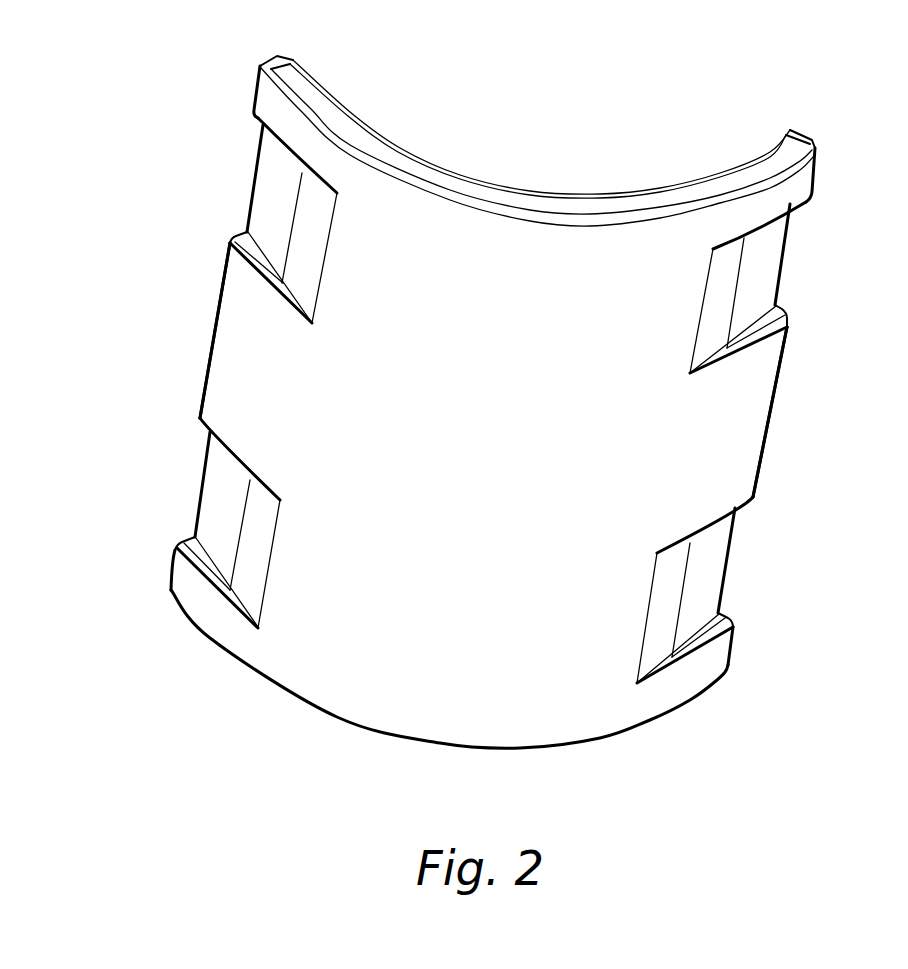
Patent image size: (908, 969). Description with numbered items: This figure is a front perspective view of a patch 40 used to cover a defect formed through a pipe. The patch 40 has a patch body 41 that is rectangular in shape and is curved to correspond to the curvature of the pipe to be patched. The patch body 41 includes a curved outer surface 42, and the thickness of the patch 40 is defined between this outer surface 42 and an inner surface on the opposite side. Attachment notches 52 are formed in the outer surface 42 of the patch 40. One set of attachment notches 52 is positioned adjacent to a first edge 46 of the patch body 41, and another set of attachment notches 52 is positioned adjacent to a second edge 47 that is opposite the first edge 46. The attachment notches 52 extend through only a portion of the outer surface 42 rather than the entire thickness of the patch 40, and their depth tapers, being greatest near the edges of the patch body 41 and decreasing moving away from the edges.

The patch 40 is at (198, 669).
The patch body 41 is at (457, 190).
The outer surface 42 is at (368, 645).
The first edge 46 is at (216, 327).
The second edge 47 is at (771, 407).
The attachment notches 52 is at (288, 172).